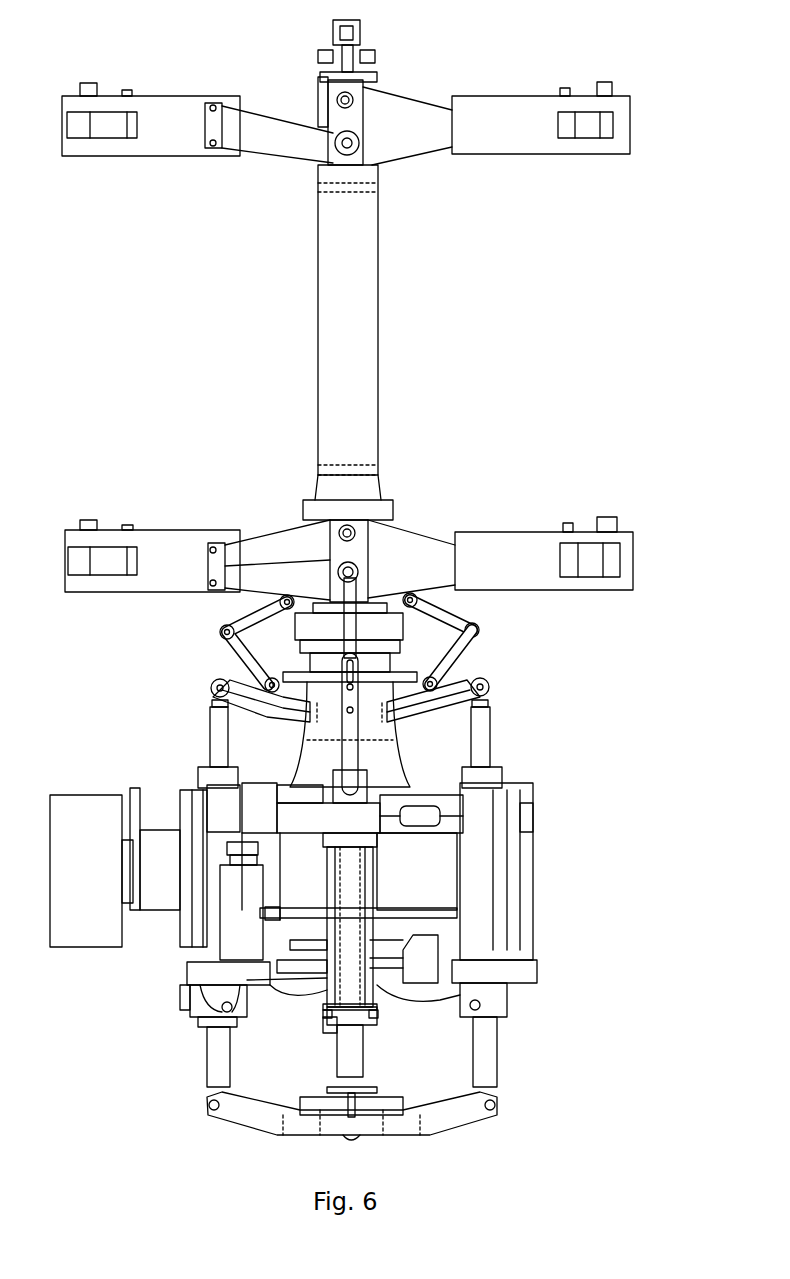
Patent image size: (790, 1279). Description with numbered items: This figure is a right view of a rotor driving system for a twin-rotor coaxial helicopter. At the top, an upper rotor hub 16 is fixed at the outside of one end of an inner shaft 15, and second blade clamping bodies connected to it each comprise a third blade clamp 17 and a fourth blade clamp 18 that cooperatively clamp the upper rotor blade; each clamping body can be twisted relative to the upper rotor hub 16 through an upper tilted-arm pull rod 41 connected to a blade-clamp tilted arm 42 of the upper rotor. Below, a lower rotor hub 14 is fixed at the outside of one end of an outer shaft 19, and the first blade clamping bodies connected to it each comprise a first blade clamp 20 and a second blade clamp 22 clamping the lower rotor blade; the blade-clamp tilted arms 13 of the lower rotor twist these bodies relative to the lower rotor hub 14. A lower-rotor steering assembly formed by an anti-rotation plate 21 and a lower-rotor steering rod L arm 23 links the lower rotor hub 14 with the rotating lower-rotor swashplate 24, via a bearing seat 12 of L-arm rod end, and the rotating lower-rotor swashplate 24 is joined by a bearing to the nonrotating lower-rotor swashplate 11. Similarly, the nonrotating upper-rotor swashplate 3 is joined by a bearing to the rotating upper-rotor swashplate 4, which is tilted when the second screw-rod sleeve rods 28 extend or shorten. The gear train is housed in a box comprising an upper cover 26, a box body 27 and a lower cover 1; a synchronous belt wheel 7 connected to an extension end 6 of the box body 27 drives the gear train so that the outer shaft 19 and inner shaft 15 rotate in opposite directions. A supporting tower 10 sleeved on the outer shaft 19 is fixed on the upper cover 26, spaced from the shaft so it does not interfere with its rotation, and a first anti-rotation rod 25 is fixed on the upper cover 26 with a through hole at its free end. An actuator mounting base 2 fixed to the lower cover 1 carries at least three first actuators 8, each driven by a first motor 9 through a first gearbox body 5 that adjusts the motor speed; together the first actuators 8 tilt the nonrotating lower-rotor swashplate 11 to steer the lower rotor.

The lower cover 1 is at (442, 943).
The actuator mounting base 2 is at (424, 998).
The nonrotating upper-rotor swashplate 3 is at (235, 1126).
The rotating upper-rotor swashplate 4 is at (295, 1100).
The first gearbox body 5 is at (183, 982).
The extension end 6 is at (155, 917).
The synchronous belt wheel 7 is at (78, 948).
The first actuator 8 is at (203, 886).
The first motor 9 is at (230, 838).
The supporting tower 10 is at (298, 768).
The nonrotating lower-rotor swashplate 11 is at (237, 683).
The bearing seat of L-arm rod end 12 is at (253, 678).
The blade-clamp tilted arm of the lower rotor 13 is at (275, 566).
The lower rotor hub 14 is at (287, 520).
The inner shaft 15 is at (317, 290).
The upper rotor hub 16 is at (413, 92).
The third blade clamp 17 is at (580, 93).
The fourth blade clamp 18 is at (622, 156).
The outer shaft 19 is at (397, 500).
The first blade clamp 20 is at (524, 530).
The anti-rotation plate 21 is at (458, 605).
The second blade clamp 22 is at (618, 592).
The lower-rotor steering rod L arm 23 is at (467, 648).
The rotating lower-rotor swashplate 24 is at (395, 682).
The first anti-rotation rod 25 is at (365, 760).
The upper cover 26 is at (417, 808).
The box body 27 is at (413, 876).
The second screw-rod sleeve rod 28 is at (500, 1062).
The upper tilted-arm pull rod 41 is at (317, 90).
The blade-clamp tilted arm of the upper rotor 42 is at (255, 105).